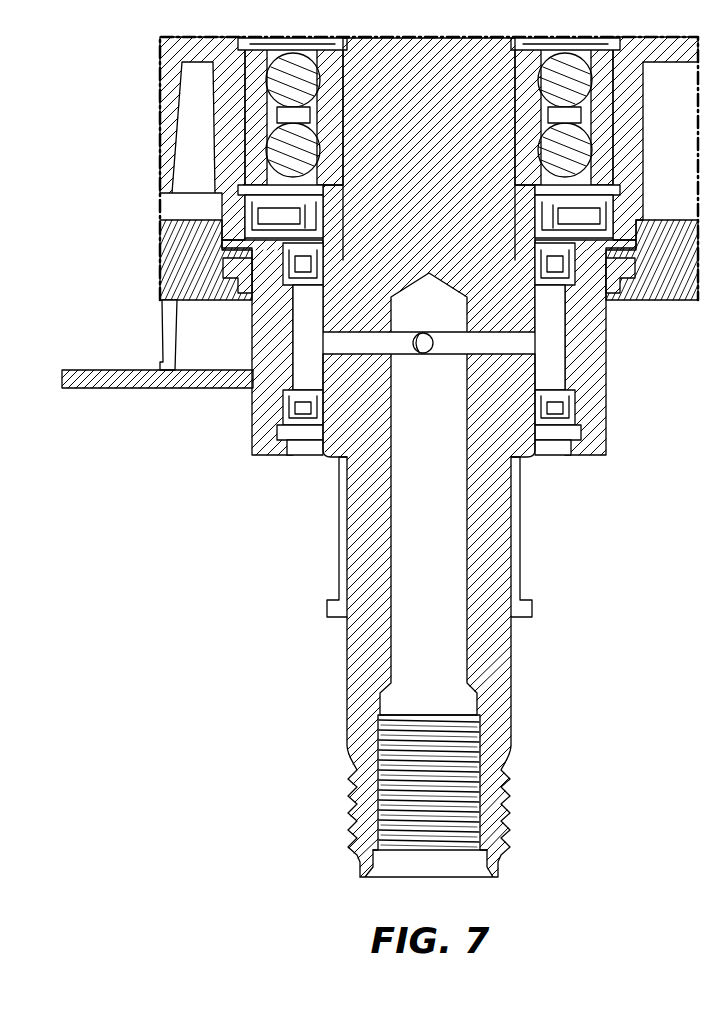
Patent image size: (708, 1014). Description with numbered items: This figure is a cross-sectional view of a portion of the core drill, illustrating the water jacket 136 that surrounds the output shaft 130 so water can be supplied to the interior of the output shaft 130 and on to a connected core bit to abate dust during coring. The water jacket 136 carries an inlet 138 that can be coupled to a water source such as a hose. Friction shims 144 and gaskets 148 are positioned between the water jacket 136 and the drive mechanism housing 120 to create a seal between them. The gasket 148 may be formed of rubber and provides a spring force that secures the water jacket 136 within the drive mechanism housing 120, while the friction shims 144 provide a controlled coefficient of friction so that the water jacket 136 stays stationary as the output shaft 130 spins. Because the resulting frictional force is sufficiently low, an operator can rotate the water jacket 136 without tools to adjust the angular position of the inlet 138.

The drive mechanism housing 120 is at (187, 293).
The output shaft 130 is at (363, 675).
The water jacket 136 is at (592, 387).
The inlet 138 is at (115, 390).
The friction shims 144 is at (605, 293).
The gaskets 148 is at (237, 302).